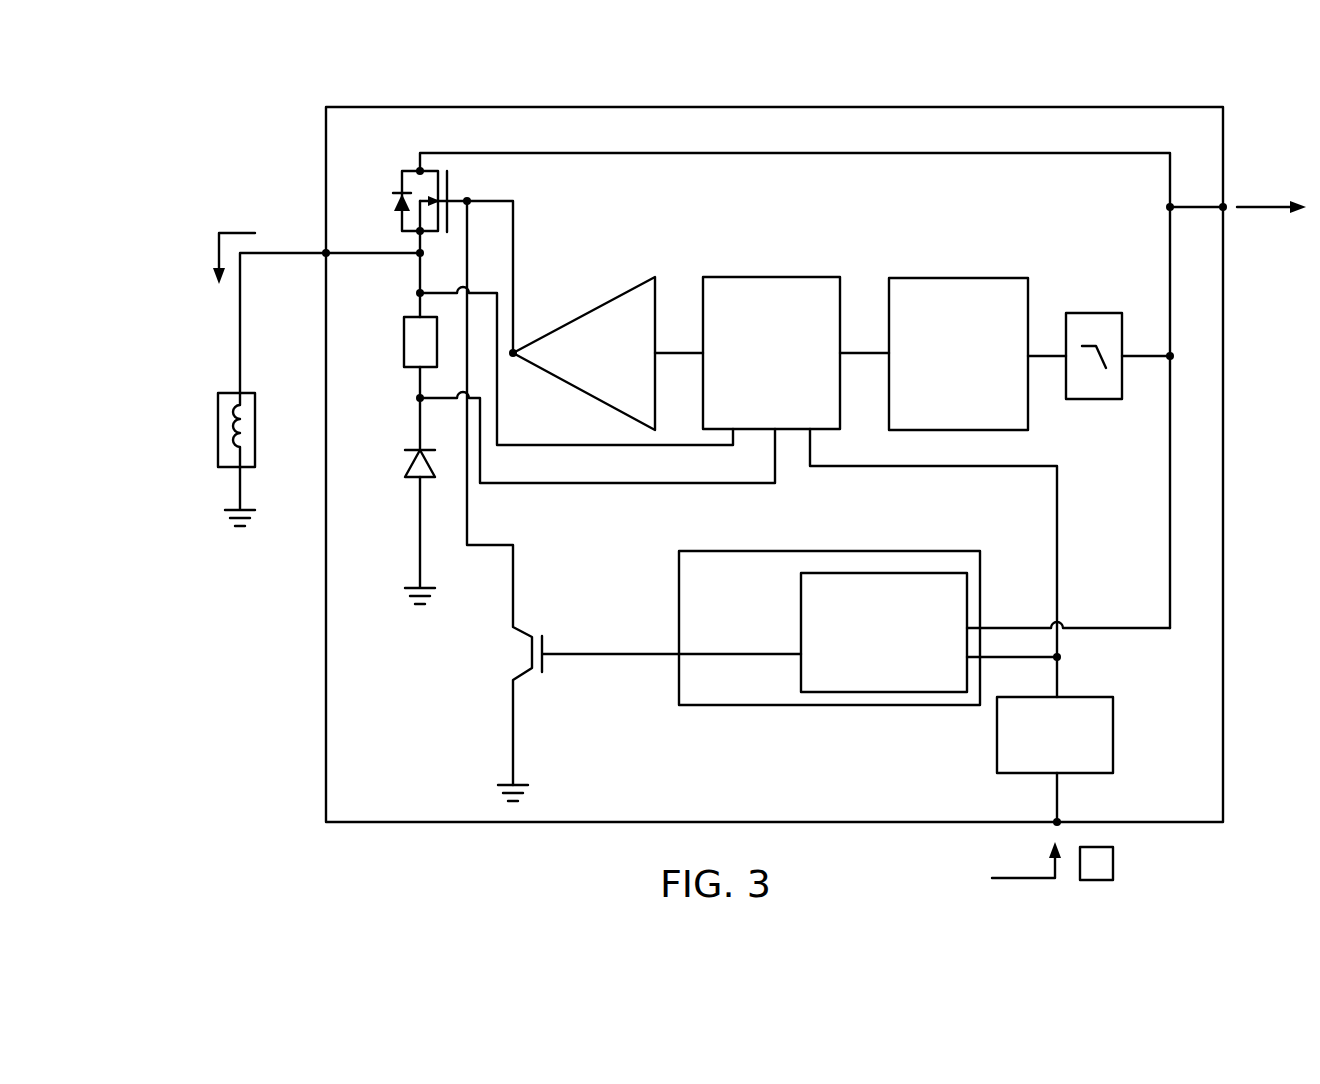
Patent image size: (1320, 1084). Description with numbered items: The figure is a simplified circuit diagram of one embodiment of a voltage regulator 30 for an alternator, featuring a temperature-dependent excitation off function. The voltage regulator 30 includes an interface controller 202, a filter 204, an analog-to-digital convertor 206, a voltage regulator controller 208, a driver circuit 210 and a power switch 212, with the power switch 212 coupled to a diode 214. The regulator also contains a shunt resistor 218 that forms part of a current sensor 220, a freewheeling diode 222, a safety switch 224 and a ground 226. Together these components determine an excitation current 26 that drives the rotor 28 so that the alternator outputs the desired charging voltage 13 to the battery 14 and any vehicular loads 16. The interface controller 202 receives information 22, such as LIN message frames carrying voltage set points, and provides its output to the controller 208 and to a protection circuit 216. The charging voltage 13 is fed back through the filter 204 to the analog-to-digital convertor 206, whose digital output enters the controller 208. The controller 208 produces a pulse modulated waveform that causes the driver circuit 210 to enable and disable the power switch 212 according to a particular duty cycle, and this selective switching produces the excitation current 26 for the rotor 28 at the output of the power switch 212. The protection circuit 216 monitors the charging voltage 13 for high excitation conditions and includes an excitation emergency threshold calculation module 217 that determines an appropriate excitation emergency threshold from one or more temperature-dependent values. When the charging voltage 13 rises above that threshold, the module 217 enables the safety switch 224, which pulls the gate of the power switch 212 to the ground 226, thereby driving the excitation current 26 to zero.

The charging voltage 13 is at (1184, 207).
The battery 14 is at (1271, 256).
The vehicular loads 16 is at (1264, 216).
The information 22 is at (1113, 865).
The excitation current 26 is at (218, 248).
The rotor 28 is at (208, 430).
The voltage regulator 30 is at (385, 803).
The interface controller 202 is at (997, 731).
The filter 204 is at (1092, 313).
The analog-to-digital convertor 206 is at (958, 278).
The voltage regulator controller 208 is at (775, 277).
The driver circuit 210 is at (586, 312).
The power switch 212 is at (449, 193).
The diode 214 is at (386, 203).
The protection circuit 216 is at (758, 645).
The excitation emergency threshold calculation module 217 is at (893, 573).
The shunt resistor 218 is at (404, 338).
The current sensor 220 is at (627, 478).
The freewheeling diode 222 is at (382, 464).
The safety switch 224 is at (556, 604).
The ground 226 is at (552, 795).